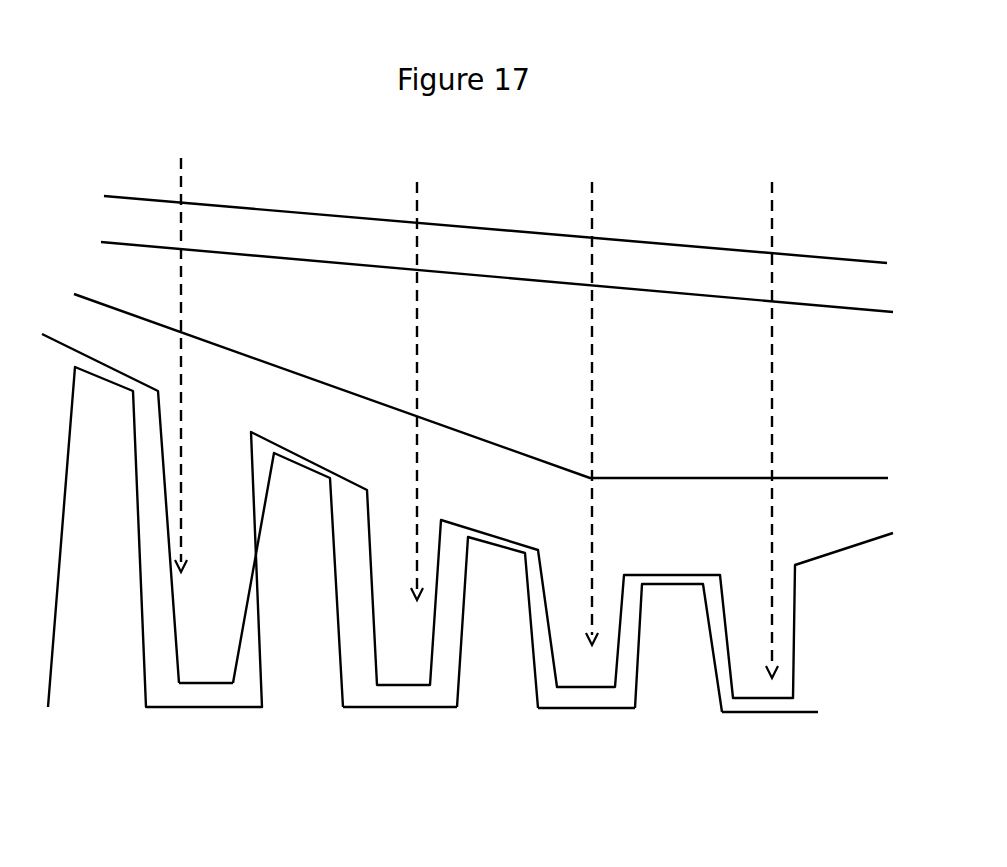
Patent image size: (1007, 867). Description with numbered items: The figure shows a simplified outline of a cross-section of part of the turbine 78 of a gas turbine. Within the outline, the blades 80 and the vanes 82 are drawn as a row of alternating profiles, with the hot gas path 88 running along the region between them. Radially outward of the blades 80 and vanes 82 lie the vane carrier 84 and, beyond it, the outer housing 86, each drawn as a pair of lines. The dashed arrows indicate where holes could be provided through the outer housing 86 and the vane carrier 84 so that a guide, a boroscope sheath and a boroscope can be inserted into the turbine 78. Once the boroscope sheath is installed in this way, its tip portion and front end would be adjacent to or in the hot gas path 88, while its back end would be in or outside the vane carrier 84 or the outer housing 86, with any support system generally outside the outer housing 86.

The turbine 78 is at (282, 127).
The blades 80 is at (101, 675).
The vanes 82 is at (208, 665).
The vane carrier 84 is at (832, 495).
The outer housing 86 is at (815, 272).
The hot gas path 88 is at (247, 695).